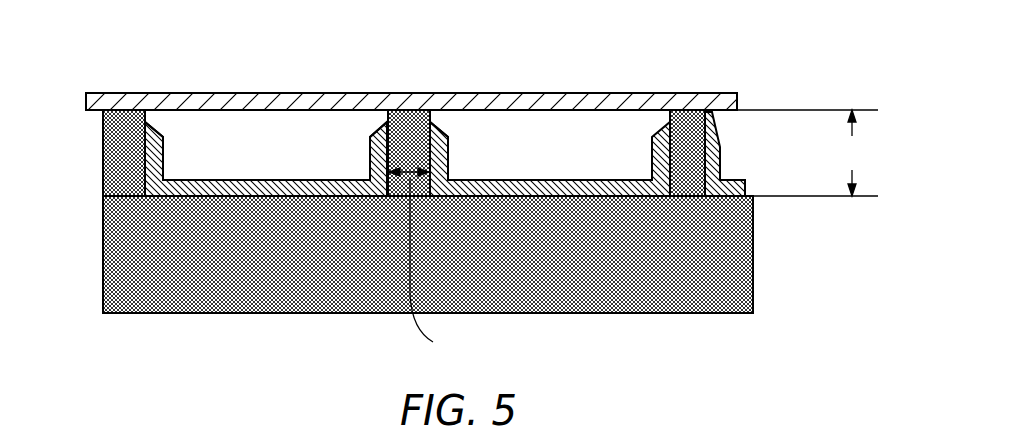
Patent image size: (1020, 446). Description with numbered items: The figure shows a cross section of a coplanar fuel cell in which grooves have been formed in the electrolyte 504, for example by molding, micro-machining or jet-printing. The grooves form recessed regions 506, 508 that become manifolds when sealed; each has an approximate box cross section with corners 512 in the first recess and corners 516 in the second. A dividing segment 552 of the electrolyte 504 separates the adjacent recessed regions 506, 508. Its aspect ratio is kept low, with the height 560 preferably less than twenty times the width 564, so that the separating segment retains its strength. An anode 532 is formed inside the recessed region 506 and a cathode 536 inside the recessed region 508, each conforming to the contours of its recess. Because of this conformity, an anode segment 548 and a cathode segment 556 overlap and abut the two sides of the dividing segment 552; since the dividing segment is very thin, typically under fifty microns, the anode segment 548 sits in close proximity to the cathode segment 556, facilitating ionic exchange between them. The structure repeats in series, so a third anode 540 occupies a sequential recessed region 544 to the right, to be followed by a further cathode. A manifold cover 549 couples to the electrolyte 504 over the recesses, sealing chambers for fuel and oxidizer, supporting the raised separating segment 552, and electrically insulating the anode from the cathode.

The electrolyte 504 is at (753, 261).
The manifold cover 549 is at (116, 93).
The corners 512 is at (163, 178).
The anode 532 is at (155, 125).
The anode segment 548 is at (370, 130).
The recessed region 506 is at (292, 135).
The dividing segment 552 is at (410, 133).
The width 564 is at (433, 262).
The corners 516 is at (449, 178).
The cathode segment 556 is at (450, 130).
The recessed region 508 is at (562, 135).
The cathode 536 is at (665, 130).
The third anode 540 is at (717, 143).
The sequential recessed region 544 is at (740, 164).
The height 560 is at (807, 153).